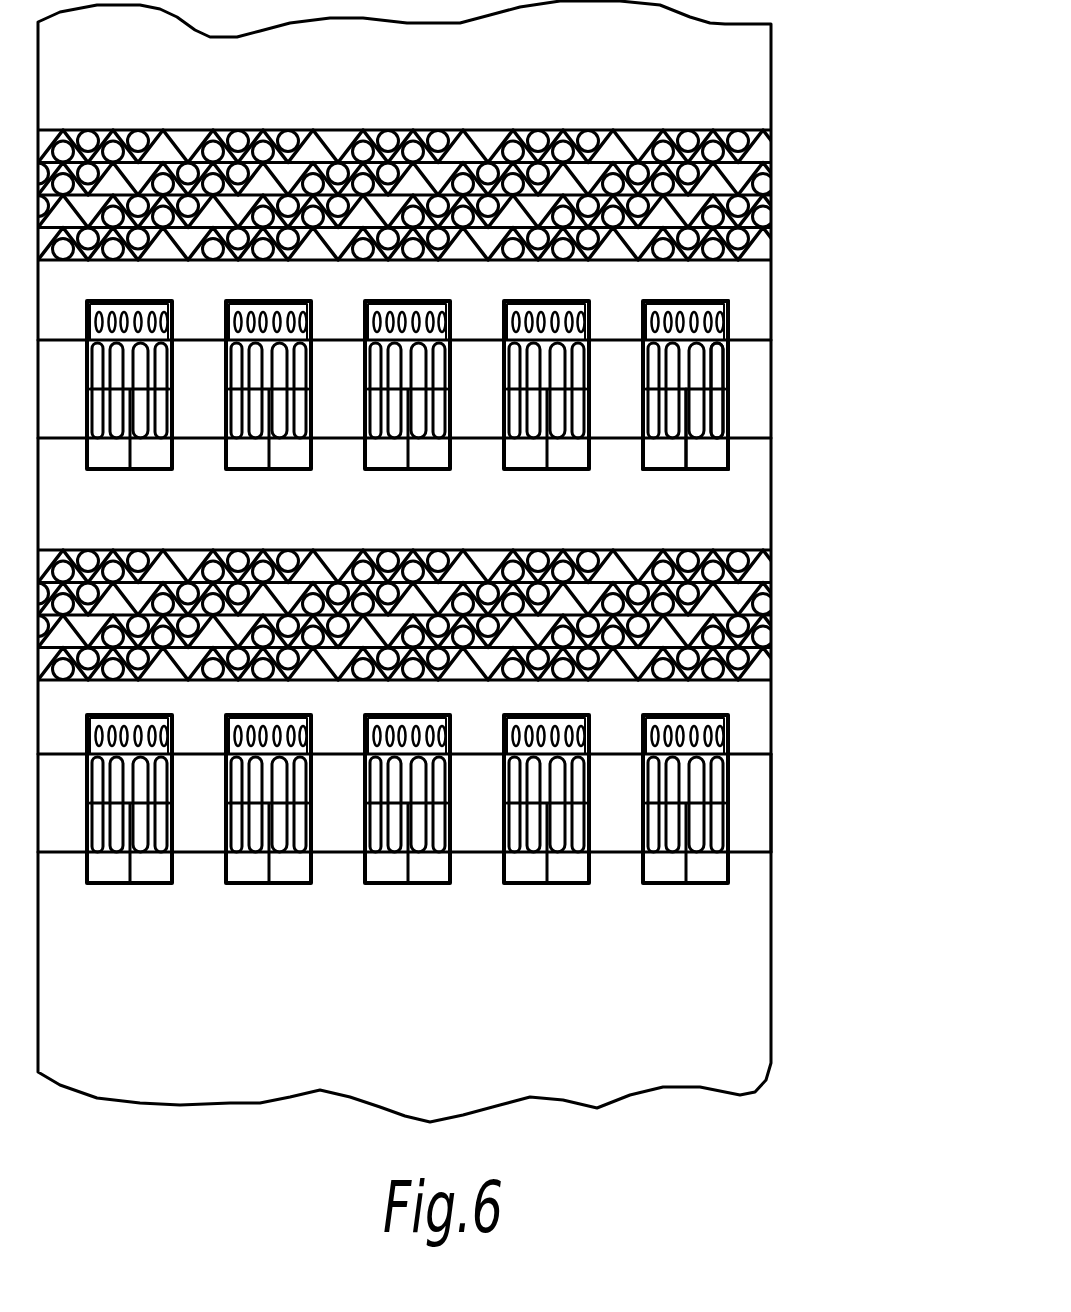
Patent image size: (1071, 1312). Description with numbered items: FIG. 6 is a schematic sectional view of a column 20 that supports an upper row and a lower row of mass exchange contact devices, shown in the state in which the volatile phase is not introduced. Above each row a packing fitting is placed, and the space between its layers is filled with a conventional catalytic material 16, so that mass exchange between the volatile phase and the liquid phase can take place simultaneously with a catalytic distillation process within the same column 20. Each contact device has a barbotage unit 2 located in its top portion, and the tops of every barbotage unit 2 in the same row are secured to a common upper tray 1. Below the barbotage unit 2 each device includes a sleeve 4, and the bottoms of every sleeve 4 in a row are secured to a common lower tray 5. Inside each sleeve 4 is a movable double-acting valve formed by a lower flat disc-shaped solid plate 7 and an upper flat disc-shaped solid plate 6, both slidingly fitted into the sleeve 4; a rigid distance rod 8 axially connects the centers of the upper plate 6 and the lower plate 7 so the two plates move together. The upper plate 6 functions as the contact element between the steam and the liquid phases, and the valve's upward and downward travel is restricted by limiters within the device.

The catalytic material 16 is at (710, 172).
The upper tray 1 is at (745, 337).
The sleeve 4 is at (727, 355).
The upper plate 6 is at (728, 385).
The lower tray 5 is at (772, 432).
The distance rod 8 is at (687, 455).
The lower plate 7 is at (715, 470).
The barbotage unit 2 is at (730, 732).
The column 20 is at (770, 787).